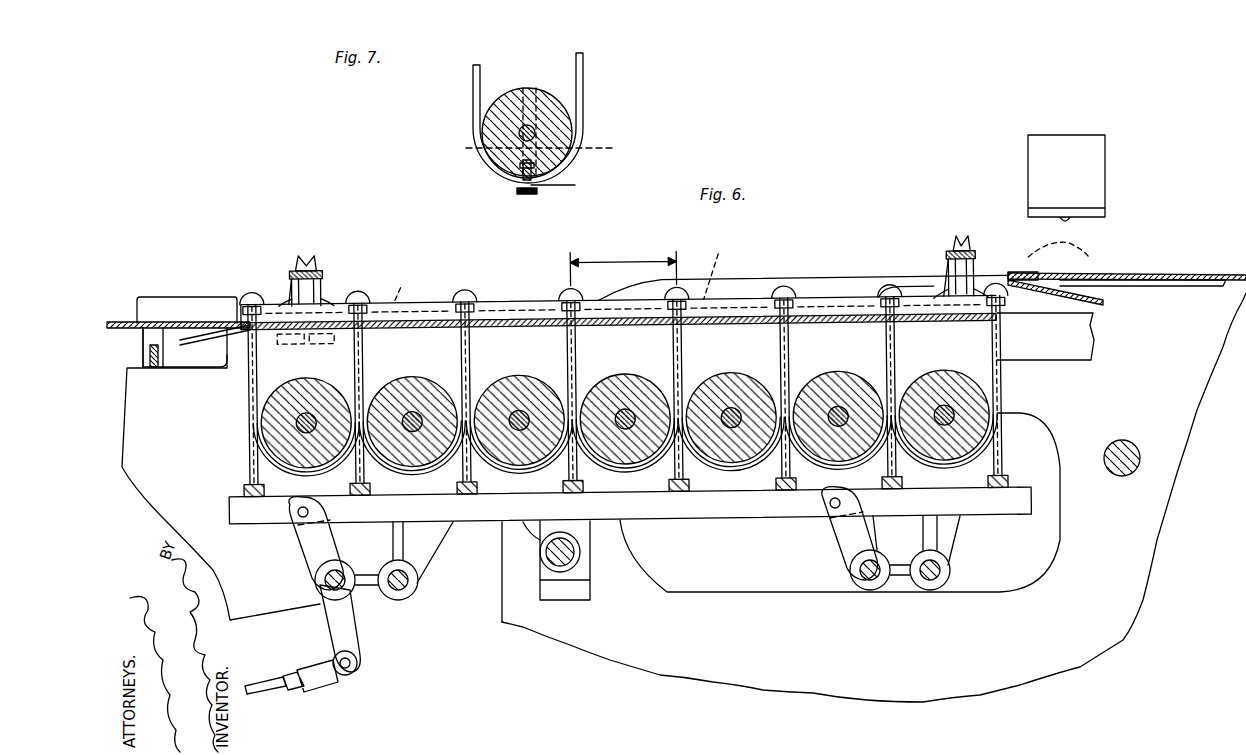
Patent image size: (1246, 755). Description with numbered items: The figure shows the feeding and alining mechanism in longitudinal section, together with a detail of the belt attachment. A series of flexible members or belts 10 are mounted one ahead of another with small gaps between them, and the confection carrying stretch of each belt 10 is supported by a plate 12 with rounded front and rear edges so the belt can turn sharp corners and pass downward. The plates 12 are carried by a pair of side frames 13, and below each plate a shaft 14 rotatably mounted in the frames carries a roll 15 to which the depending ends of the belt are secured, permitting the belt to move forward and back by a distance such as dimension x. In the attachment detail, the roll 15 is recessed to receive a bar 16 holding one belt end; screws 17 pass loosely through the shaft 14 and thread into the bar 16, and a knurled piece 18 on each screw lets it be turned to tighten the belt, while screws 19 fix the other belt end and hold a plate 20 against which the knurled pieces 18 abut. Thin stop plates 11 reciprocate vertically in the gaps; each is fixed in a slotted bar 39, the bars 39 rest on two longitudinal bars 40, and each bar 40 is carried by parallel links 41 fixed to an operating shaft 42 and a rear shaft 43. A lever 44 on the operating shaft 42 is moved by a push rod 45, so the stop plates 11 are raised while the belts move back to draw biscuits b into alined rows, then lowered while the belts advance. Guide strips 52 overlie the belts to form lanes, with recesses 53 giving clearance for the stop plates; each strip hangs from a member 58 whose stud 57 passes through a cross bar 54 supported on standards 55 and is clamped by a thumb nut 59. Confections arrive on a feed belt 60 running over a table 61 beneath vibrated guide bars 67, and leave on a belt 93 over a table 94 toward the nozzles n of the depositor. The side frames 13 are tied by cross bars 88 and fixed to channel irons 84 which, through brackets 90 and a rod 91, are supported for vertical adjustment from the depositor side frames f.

In FIG. 7, the flexible members or belts 10 is at (580, 78).
In FIG. 6, the flexible members or belts 10 is at (420, 300).
In FIG. 6, the stop plates 11 is at (252, 300).
In FIG. 6, the plate 12 is at (619, 344).
In FIG. 6, the side frames 13 is at (221, 487).
In FIG. 7, the shaft 14 is at (535, 143).
In FIG. 6, the shaft 14 is at (540, 380).
In FIG. 7, the roll 15 is at (560, 130).
In FIG. 6, the roll 15 is at (405, 385).
In FIG. 7, the bar 16 is at (523, 172).
In FIG. 7, the screws 17 is at (478, 153).
In FIG. 7, the knurled piece 18 is at (530, 194).
In FIG. 7, the screws 19 is at (575, 186).
In FIG. 7, the plate 20 is at (527, 168).
In FIG. 6, the bar 39 is at (370, 491).
In FIG. 6, the bars 40 is at (530, 507).
In FIG. 6, the parallel links 41 is at (305, 535).
In FIG. 6, the operating shaft 42 is at (345, 590).
In FIG. 6, the shaft 43 is at (868, 585).
In FIG. 6, the lever 44 is at (325, 625).
In FIG. 6, the push rod 45 is at (262, 695).
In FIG. 6, the guide strips 52 is at (860, 300).
In FIG. 6, the recesses 53 is at (893, 298).
In FIG. 6, the cross bar 54 is at (290, 270).
In FIG. 6, the standards 55 is at (328, 300).
In FIG. 6, the studs 57 is at (312, 267).
In FIG. 6, the member 58 is at (300, 288).
In FIG. 6, the thumb nuts 59 is at (318, 258).
In FIG. 6, the feed belt 60 is at (195, 322).
In FIG. 6, the table 61 is at (130, 330).
In FIG. 6, the guide bars 67 is at (150, 297).
In FIG. 6, the channel irons 84 is at (1050, 350).
In FIG. 6, the cross bars 88 is at (405, 590).
In FIG. 6, the brackets 90 is at (520, 535).
In FIG. 6, the rod 91 is at (575, 562).
In FIG. 6, the belt 93 is at (1093, 274).
In FIG. 6, the table 94 is at (1130, 275).
In FIG. 6, the biscuits b is at (741, 265).
In FIG. 6, the side frames f is at (874, 497).
In FIG. 6, the nozzles n is at (1065, 210).
In FIG. 6, the dimension x is at (623, 268).